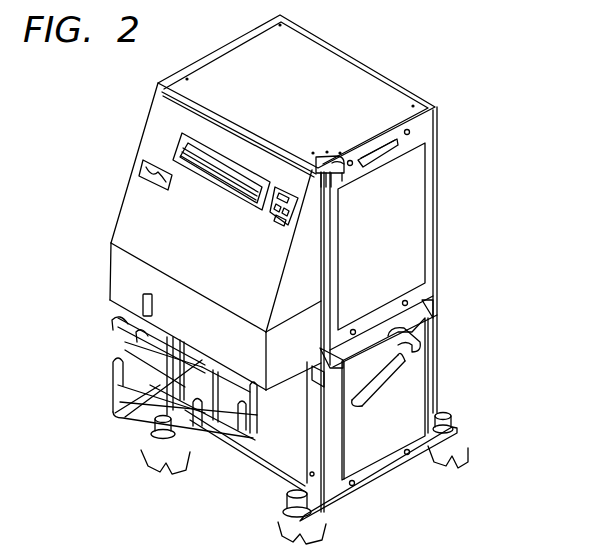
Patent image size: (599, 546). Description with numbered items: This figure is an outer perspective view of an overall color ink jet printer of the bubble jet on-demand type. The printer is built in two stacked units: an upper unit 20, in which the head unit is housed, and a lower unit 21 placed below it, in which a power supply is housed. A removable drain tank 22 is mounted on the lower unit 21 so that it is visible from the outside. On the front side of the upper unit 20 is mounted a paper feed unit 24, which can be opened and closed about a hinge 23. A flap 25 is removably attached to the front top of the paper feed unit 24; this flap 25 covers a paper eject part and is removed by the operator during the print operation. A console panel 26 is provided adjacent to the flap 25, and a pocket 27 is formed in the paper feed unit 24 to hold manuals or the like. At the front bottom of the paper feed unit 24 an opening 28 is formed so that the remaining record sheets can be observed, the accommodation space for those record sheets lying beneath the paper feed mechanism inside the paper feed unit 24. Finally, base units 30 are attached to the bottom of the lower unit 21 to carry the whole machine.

The upper unit 20 is at (440, 242).
The lower unit 21 is at (443, 362).
The drain tank 22 is at (372, 437).
The hinge 23 is at (331, 163).
The paper feed unit 24 is at (136, 139).
The flap 25 is at (210, 138).
The console panel 26 is at (283, 186).
The pocket 27 is at (150, 186).
The opening 28 is at (142, 302).
The base units 30 is at (148, 470).